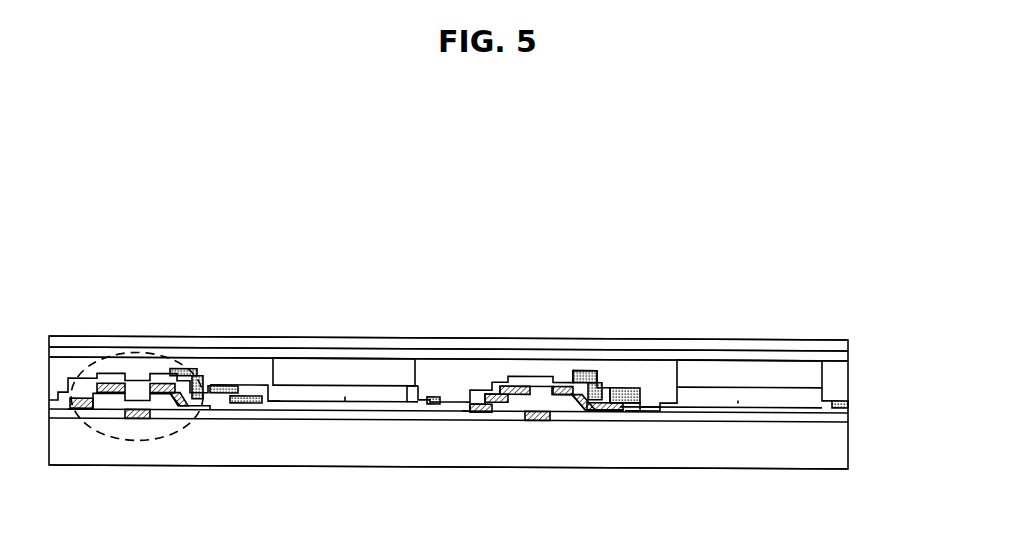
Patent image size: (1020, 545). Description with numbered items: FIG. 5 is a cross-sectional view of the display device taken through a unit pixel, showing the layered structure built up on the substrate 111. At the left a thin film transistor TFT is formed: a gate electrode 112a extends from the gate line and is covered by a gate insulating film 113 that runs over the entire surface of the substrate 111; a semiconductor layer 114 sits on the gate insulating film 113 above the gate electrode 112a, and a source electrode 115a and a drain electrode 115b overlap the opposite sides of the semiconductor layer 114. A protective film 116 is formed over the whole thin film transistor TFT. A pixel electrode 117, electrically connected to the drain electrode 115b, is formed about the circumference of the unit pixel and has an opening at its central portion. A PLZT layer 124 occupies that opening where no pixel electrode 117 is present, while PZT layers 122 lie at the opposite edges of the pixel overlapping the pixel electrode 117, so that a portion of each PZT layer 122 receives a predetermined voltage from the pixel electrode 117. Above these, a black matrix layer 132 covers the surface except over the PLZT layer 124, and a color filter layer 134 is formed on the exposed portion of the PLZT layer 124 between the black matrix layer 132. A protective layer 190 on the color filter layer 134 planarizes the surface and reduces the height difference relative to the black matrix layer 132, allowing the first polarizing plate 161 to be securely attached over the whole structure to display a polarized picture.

The substrate 111 is at (838, 448).
The gate electrode 112a is at (138, 418).
The gate insulating film 113 is at (838, 418).
The semiconductor layer 114 is at (105, 405).
The source electrode 115a is at (110, 376).
The drain electrode 115b is at (210, 407).
The protective film 116 is at (840, 404).
The pixel electrode 117 is at (193, 365).
The PZT layer 122 is at (268, 400).
The PLZT layer 124 is at (738, 397).
The black matrix layer 132 is at (843, 378).
The color filter layer 134 is at (403, 357).
The first polarizing plate 161 is at (655, 343).
The protective layer 190 is at (465, 353).
The thin film transistor TFT is at (150, 355).